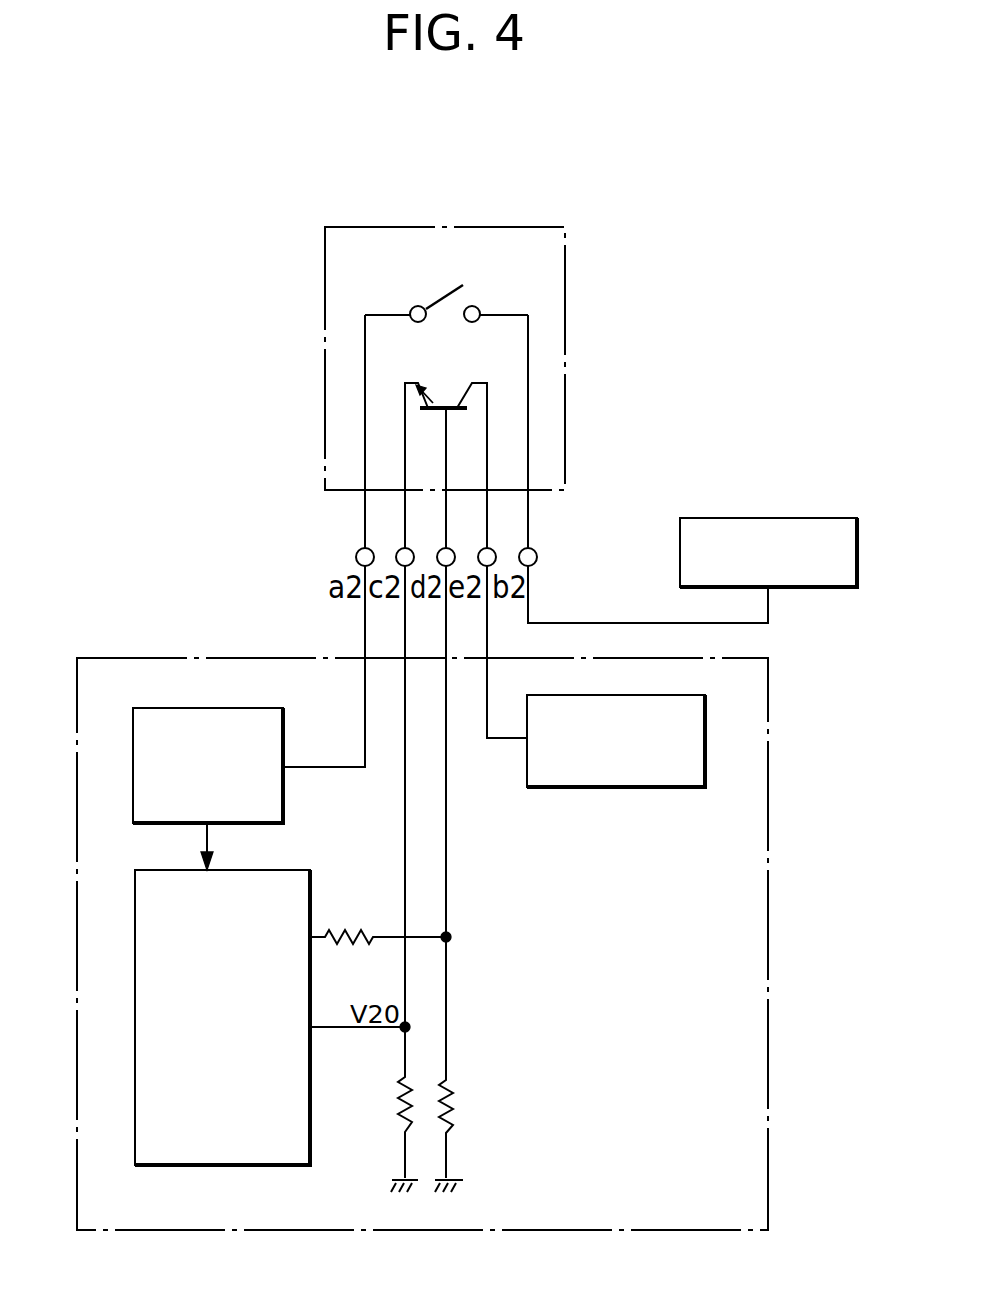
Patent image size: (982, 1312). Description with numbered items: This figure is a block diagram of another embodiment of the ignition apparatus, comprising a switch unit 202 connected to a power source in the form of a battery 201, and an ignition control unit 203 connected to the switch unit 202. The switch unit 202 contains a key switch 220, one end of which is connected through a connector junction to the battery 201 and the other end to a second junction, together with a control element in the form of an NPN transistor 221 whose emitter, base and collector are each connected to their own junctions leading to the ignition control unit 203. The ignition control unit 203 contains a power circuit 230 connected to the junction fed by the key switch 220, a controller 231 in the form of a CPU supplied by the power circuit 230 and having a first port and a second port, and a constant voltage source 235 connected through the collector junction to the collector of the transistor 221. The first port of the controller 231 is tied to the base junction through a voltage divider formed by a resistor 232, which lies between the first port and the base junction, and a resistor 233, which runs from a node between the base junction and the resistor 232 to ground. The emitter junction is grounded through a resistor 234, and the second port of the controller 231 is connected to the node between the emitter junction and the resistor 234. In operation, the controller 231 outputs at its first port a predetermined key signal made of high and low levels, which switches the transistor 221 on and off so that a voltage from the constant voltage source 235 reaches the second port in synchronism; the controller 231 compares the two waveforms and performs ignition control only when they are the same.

The battery 201 is at (749, 518).
The switch unit 202 is at (492, 228).
The ignition control unit 203 is at (770, 917).
The key switch 220 is at (432, 304).
The transistor 221 is at (443, 392).
The power circuit 230 is at (167, 707).
The controller 231 is at (163, 870).
The resistor 232 is at (363, 930).
The resistor 233 is at (460, 1088).
The resistor 234 is at (403, 1087).
The constant voltage source 235 is at (580, 788).